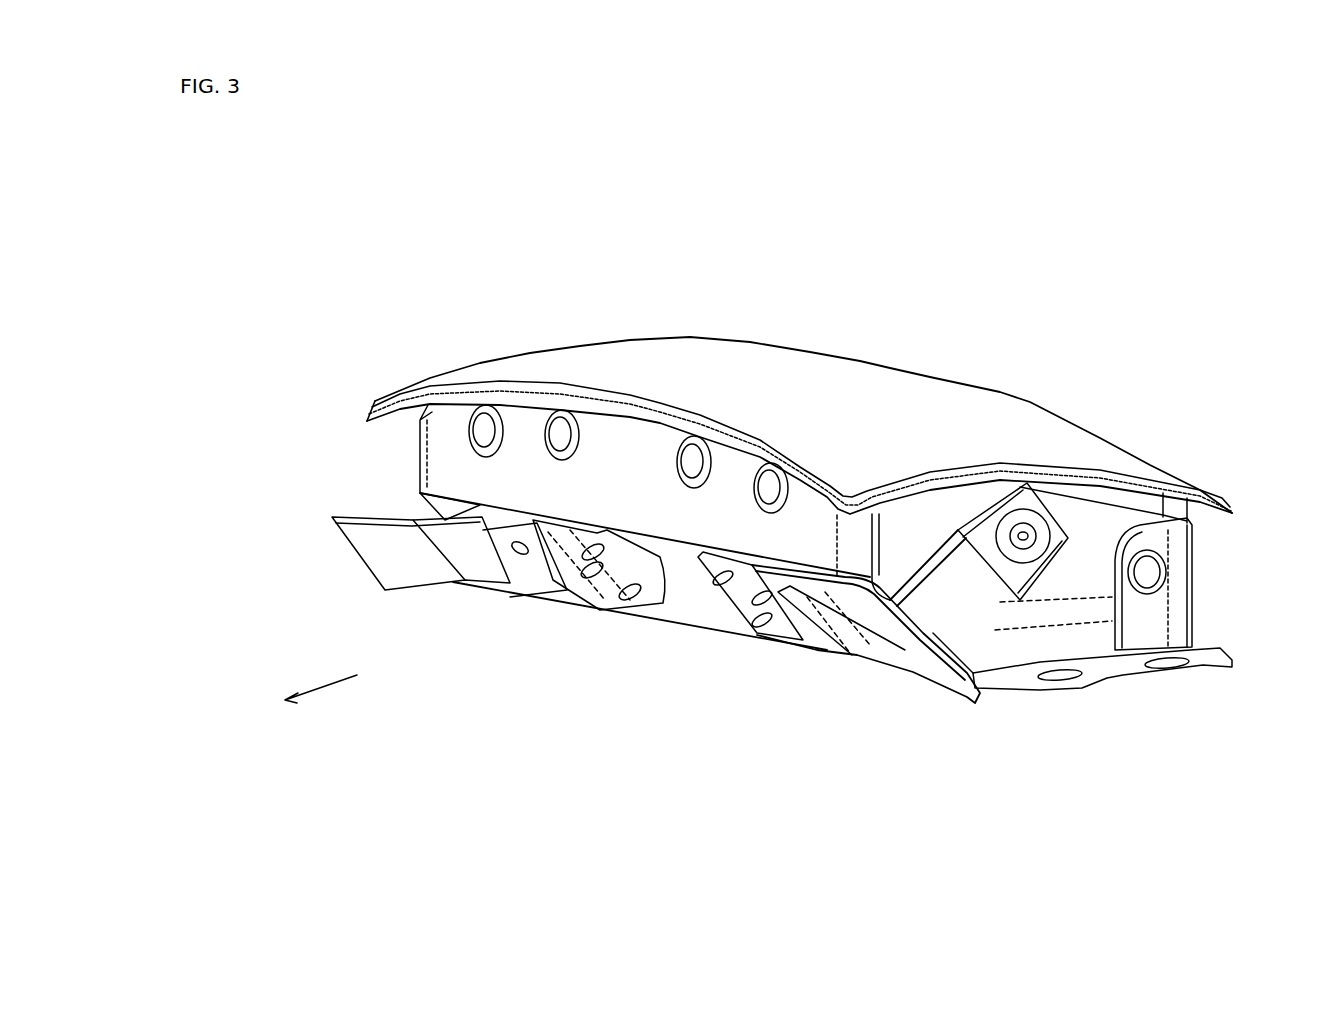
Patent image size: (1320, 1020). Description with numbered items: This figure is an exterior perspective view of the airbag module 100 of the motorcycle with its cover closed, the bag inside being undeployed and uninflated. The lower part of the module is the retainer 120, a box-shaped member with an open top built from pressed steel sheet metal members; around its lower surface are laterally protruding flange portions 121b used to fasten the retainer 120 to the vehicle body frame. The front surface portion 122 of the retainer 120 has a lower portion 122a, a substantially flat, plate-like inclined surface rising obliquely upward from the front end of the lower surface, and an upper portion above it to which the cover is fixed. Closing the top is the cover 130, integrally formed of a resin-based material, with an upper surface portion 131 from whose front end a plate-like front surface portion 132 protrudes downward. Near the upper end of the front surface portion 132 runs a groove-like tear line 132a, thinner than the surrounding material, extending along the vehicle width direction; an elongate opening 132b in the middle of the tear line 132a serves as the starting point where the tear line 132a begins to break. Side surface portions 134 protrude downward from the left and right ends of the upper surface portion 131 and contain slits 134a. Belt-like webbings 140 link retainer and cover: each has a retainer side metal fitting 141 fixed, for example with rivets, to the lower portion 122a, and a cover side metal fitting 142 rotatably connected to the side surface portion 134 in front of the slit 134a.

The airbag module 100 is at (346, 285).
The retainer 120 is at (648, 660).
The flange portions 121b is at (1080, 688).
The front surface portion 122 is at (693, 588).
The lower portion 122a is at (640, 616).
The cover 130 is at (635, 279).
The upper surface portion 131 is at (889, 368).
The front surface portion 132 is at (476, 483).
The tear line 132a is at (537, 395).
The opening 132b is at (645, 405).
The side surface portions 134 is at (1073, 587).
The slits 134a is at (1120, 578).
The webbings 140 is at (970, 602).
The retainer side metal fitting 141 is at (780, 630).
The cover side metal fitting 142 is at (1038, 587).